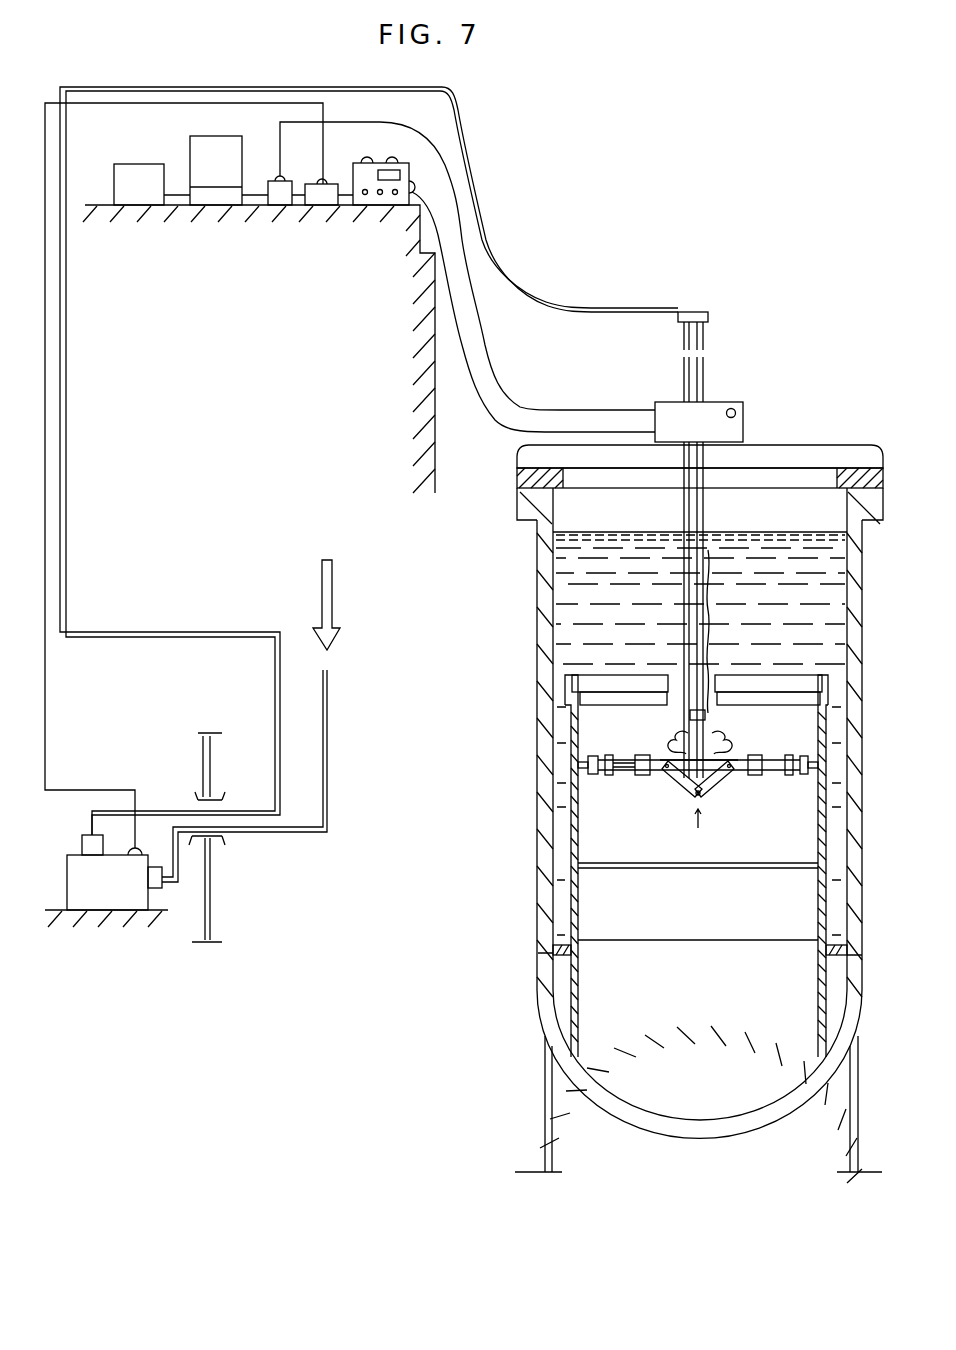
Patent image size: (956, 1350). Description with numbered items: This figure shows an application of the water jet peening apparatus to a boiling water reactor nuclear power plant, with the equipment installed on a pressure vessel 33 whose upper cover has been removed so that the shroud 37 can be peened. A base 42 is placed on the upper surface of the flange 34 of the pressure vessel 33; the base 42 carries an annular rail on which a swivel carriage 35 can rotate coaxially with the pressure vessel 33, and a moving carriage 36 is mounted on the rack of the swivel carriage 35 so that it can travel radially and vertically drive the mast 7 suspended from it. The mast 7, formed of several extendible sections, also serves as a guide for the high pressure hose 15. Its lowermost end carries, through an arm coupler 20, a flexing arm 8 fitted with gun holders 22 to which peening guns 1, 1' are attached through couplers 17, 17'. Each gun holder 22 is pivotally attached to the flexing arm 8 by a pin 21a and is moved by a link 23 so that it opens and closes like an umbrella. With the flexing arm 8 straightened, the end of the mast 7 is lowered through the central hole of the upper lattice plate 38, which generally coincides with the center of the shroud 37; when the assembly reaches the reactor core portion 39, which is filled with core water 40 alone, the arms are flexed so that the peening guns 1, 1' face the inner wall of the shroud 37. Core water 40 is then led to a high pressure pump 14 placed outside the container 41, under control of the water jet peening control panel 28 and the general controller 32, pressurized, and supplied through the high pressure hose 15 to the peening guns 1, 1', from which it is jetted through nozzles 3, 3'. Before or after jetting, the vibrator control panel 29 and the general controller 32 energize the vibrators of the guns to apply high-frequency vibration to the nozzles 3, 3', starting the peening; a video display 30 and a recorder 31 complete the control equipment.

The peening gun 1 is at (731, 741).
The peening gun 1' is at (608, 738).
The nozzle 3 is at (798, 784).
The nozzle 3' is at (600, 784).
The mast 7 is at (697, 572).
The flexing arm 8 is at (708, 737).
The high pressure pump 14 is at (105, 905).
The high pressure hose 15 is at (470, 178).
The coupler 17 is at (762, 789).
The coupler 17' is at (652, 789).
The arm coupler 20 is at (735, 683).
The pin 21a is at (690, 798).
The gun holder 22 is at (655, 750).
The link 23 is at (712, 790).
The water jet peening control panel 28 is at (325, 200).
The vibrator control panel 29 is at (282, 198).
The video display 30 is at (216, 198).
The recorder 31 is at (137, 198).
The general controller 32 is at (372, 200).
The pressure vessel 33 is at (542, 733).
The flange 34 is at (513, 507).
The swivel carriage 35 is at (517, 452).
The moving carriage 36 is at (670, 402).
The shroud 37 is at (573, 803).
The upper lattice plate 38 is at (590, 683).
The reactor core portion 39 is at (730, 852).
The core water 40 is at (322, 584).
The container 41 is at (213, 887).
The base 42 is at (517, 476).